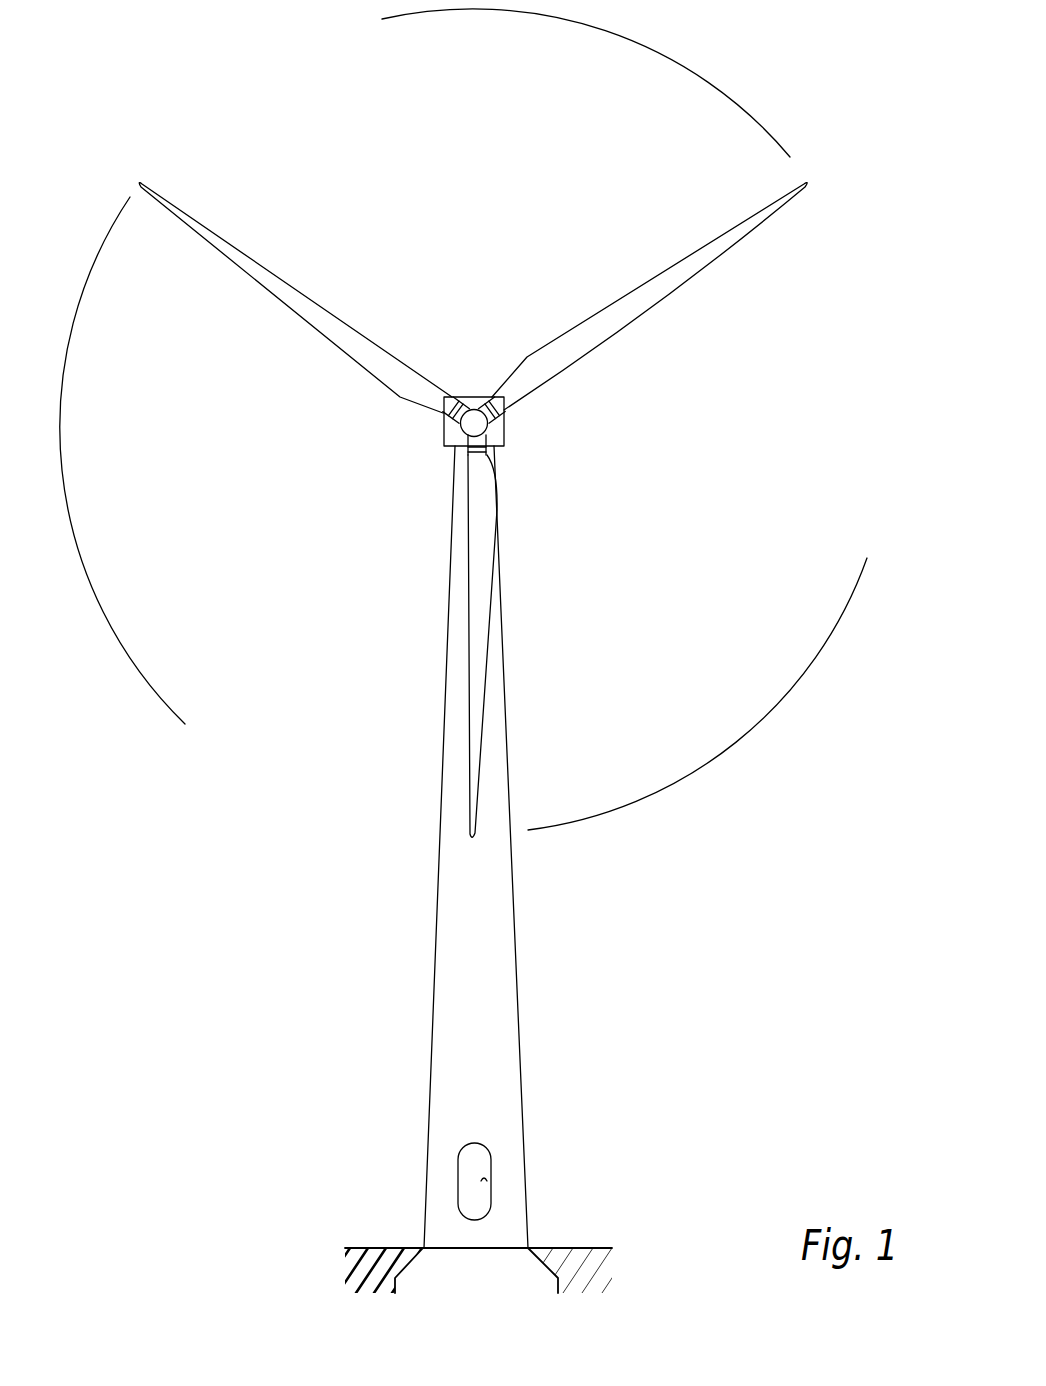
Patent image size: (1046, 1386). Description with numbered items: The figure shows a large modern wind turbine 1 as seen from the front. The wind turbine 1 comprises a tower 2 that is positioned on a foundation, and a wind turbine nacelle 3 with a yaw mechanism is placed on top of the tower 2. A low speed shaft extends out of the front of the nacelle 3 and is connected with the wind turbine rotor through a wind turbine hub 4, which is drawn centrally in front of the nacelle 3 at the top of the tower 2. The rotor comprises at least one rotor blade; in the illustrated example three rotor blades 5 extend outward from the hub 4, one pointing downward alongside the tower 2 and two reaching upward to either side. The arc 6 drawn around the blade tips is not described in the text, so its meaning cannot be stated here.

The wind turbine 1 is at (410, 1057).
The tower 2 is at (507, 931).
The wind turbine nacelle 3 is at (504, 445).
The wind turbine hub 4 is at (470, 413).
The rotor blades 5 is at (477, 682).
The rotor swept area circle 6 is at (757, 682).